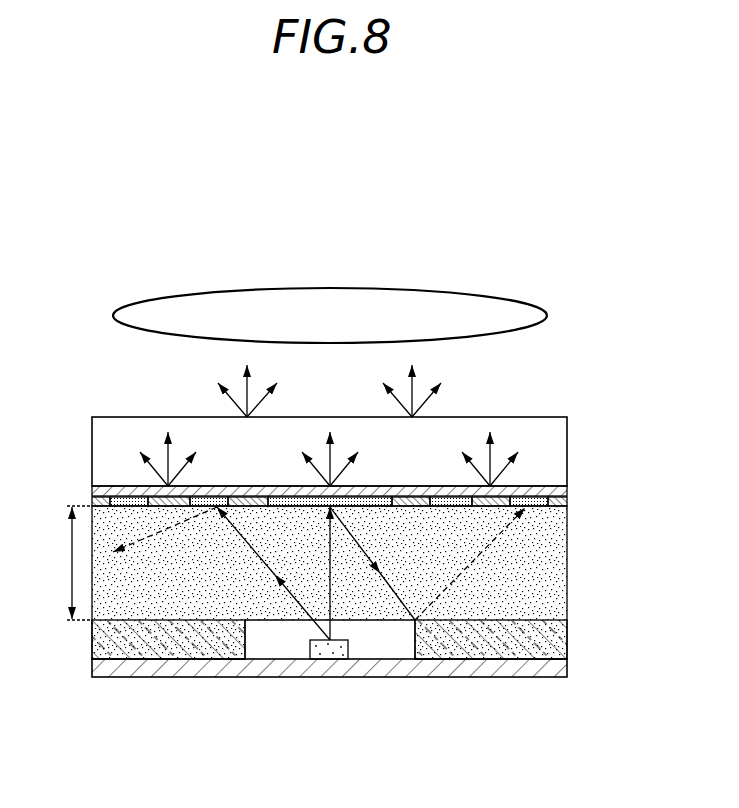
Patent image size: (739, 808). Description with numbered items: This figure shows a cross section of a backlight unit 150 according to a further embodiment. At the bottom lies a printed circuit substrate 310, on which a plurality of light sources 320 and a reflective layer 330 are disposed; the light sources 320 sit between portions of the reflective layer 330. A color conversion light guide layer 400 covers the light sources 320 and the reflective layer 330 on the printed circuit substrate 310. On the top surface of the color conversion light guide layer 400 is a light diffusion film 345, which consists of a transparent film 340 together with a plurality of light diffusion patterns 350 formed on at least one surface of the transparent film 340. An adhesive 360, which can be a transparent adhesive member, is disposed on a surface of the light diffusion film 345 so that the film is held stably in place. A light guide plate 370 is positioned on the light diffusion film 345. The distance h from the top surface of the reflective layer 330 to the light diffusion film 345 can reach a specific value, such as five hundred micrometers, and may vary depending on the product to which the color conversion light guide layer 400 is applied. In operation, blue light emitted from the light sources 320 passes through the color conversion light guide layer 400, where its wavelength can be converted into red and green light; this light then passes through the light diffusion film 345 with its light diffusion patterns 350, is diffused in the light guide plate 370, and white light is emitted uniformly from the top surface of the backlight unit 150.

The backlight unit 150 is at (125, 258).
The light guide plate 370 is at (567, 451).
The transparent film 340 is at (567, 490).
The adhesive 360 is at (567, 500).
The light diffusion patterns 350 is at (567, 506).
The light diffusion film 345 is at (390, 510).
The color conversion light guide layer 400 is at (567, 600).
The reflective layer 330 is at (567, 637).
The light sources 320 is at (330, 660).
The printed circuit substrate 310 is at (567, 672).